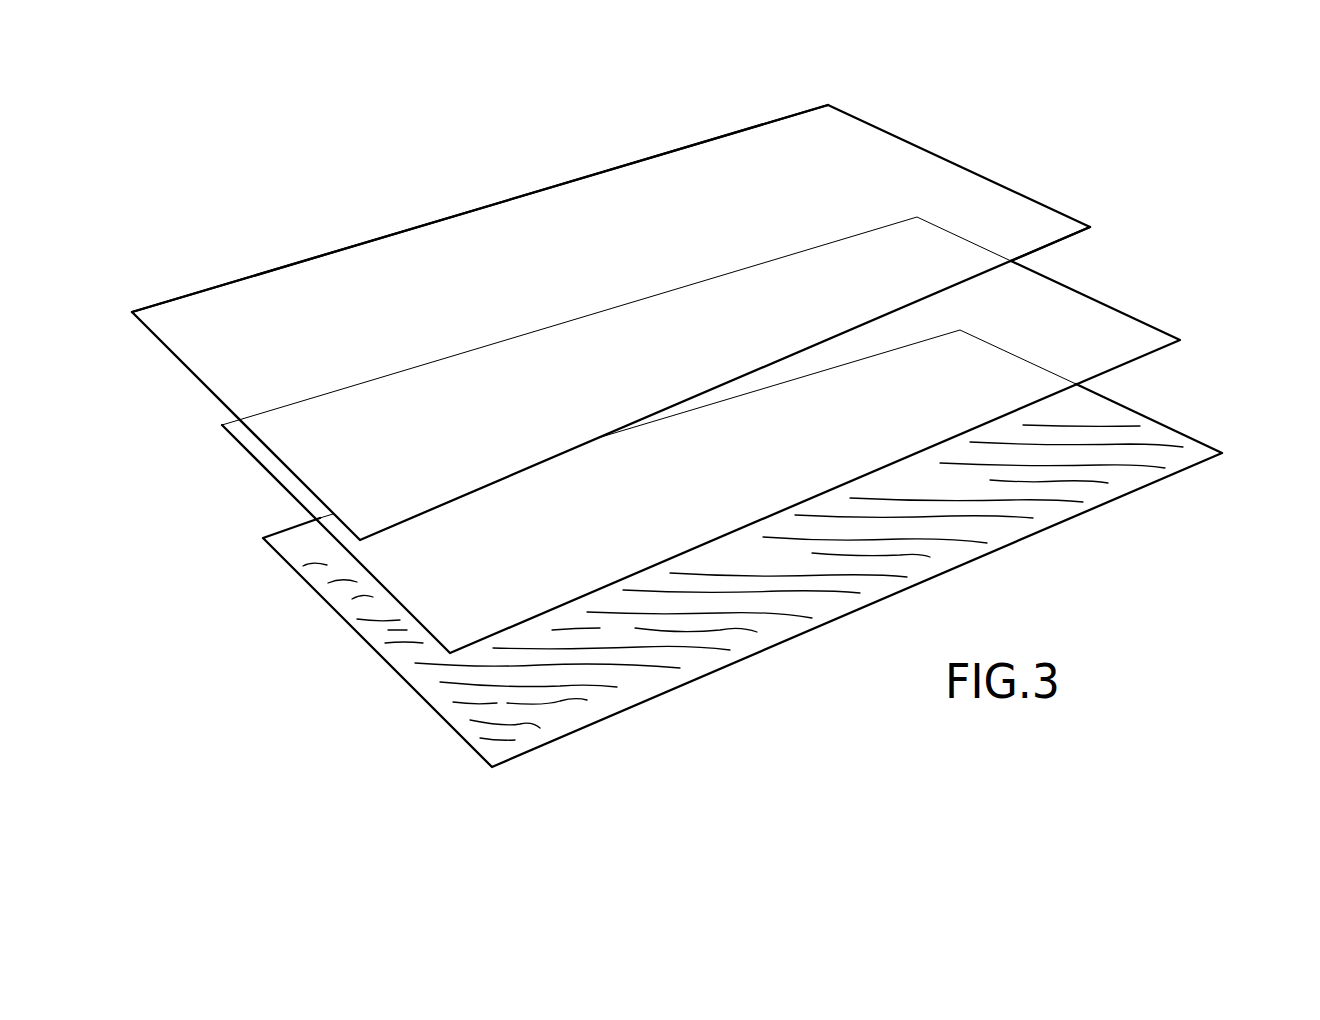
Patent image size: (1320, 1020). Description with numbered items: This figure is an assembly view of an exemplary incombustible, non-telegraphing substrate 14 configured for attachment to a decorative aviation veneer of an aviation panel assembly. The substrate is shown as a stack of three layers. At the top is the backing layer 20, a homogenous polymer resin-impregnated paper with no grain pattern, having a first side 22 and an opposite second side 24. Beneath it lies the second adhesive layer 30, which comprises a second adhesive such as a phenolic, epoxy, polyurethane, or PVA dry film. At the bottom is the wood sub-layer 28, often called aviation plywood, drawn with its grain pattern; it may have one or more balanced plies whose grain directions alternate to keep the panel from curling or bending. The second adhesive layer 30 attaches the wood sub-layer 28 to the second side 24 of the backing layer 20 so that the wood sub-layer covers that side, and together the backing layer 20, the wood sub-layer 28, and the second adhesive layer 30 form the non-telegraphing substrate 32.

The incombustible, non-telegraphing substrate 14 is at (703, 435).
The non-telegraphing substrate 32 is at (297, 177).
The backing layer 20 is at (987, 178).
The first side 22 is at (736, 231).
The second side 24 is at (1058, 243).
The second adhesive layer 30 is at (1125, 313).
The wood sub-layer 28 is at (1197, 437).